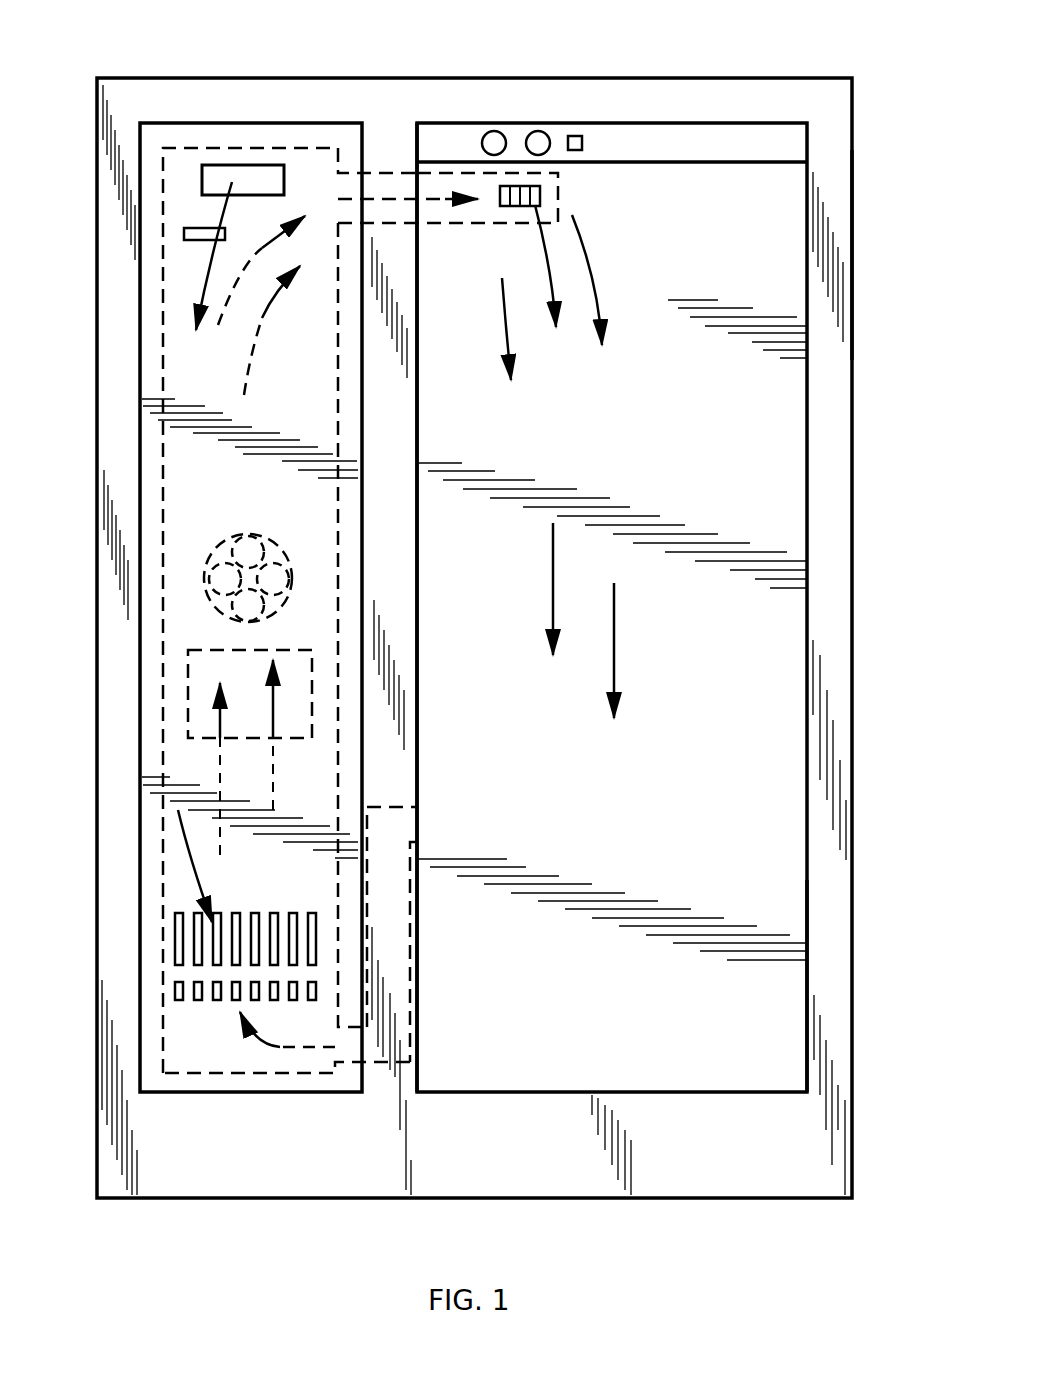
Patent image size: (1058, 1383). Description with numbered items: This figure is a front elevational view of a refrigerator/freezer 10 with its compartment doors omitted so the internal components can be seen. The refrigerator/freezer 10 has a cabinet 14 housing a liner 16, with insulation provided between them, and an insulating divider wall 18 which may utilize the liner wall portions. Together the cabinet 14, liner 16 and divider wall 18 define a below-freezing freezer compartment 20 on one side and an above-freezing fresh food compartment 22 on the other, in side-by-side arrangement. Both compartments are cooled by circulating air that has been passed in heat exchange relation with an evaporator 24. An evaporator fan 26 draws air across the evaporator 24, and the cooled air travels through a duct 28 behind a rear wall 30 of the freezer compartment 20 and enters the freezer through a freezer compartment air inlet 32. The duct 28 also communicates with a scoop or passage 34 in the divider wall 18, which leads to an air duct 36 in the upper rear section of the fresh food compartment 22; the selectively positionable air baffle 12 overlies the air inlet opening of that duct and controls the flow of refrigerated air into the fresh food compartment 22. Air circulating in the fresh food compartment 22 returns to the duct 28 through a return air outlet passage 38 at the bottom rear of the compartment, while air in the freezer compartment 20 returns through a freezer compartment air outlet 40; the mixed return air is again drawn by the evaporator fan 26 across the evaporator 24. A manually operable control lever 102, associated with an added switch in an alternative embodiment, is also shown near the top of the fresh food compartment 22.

The refrigerator/freezer 10 is at (843, 70).
The air baffle 12 is at (543, 194).
The cabinet 14 is at (862, 272).
The liner 16 is at (782, 748).
The divider wall 18 is at (415, 670).
The freezer compartment 20 is at (140, 612).
The fresh food compartment 22 is at (806, 990).
The evaporator 24 is at (188, 718).
The evaporator fan 26 is at (248, 535).
The duct 28 is at (163, 519).
The rear wall 30 is at (310, 180).
The freezer compartment air inlet 32 is at (243, 178).
The passage 34 is at (428, 160).
The air duct 36 is at (497, 178).
The return air outlet passage 38 is at (410, 826).
The freezer compartment air outlet 40 is at (197, 934).
The control lever 102 is at (575, 135).